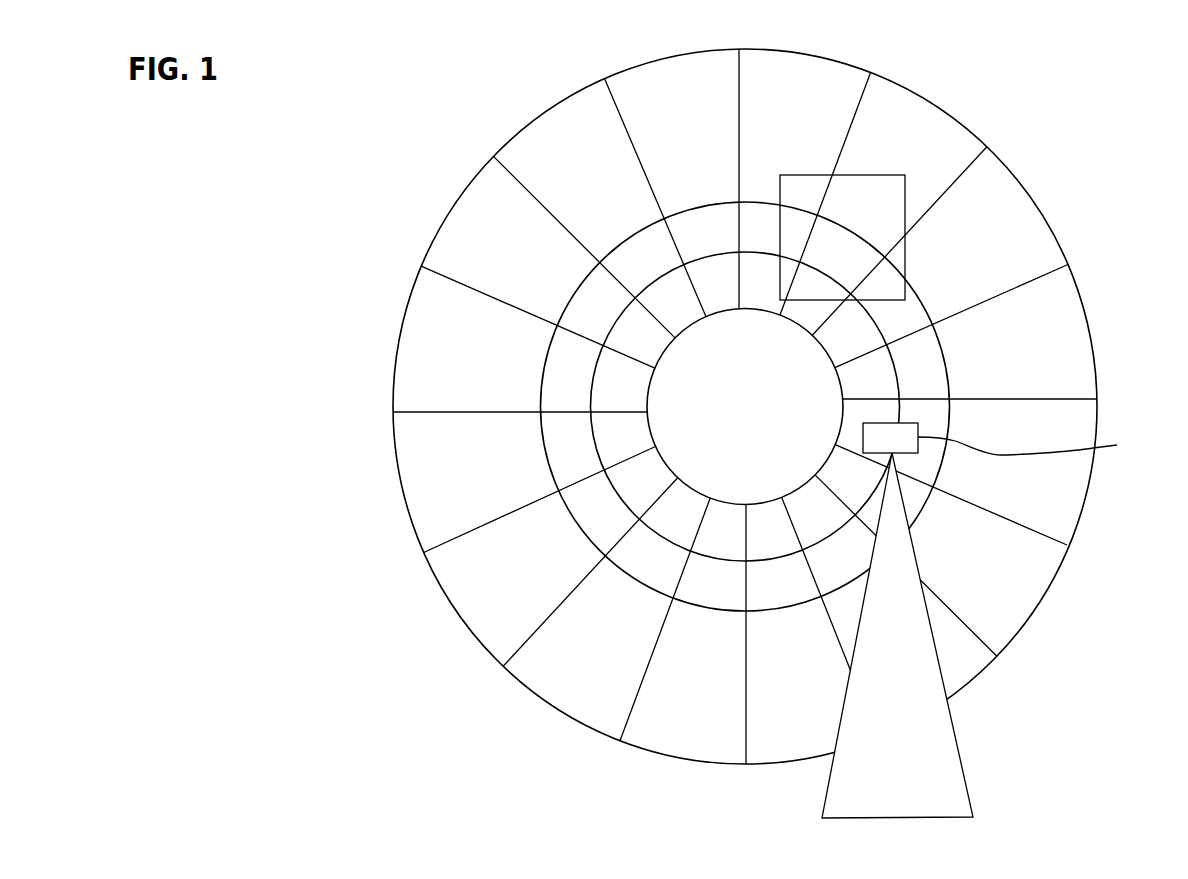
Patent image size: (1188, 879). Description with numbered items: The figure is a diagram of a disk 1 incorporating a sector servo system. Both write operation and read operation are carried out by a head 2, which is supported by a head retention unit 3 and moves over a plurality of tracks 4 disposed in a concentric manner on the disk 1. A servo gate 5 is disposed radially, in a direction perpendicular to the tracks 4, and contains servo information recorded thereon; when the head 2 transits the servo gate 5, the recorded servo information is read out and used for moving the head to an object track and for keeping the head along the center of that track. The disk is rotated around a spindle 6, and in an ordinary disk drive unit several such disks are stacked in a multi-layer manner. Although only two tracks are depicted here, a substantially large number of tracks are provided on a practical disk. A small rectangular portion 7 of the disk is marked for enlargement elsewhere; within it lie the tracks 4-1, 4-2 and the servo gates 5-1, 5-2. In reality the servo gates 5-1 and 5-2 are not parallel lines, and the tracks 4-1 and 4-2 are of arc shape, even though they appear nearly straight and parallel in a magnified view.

The disk 1 is at (1053, 308).
The head 2 is at (1024, 448).
The head retention unit 3 is at (963, 753).
The tracks 4 is at (947, 440).
The track 4-1 is at (828, 217).
The track 4-2 is at (808, 261).
The servo gate 5 is at (1053, 398).
The servo gate 5-1 is at (856, 113).
The servo gate 5-2 is at (958, 176).
The spindle 6 is at (647, 425).
The portion 7 is at (873, 175).